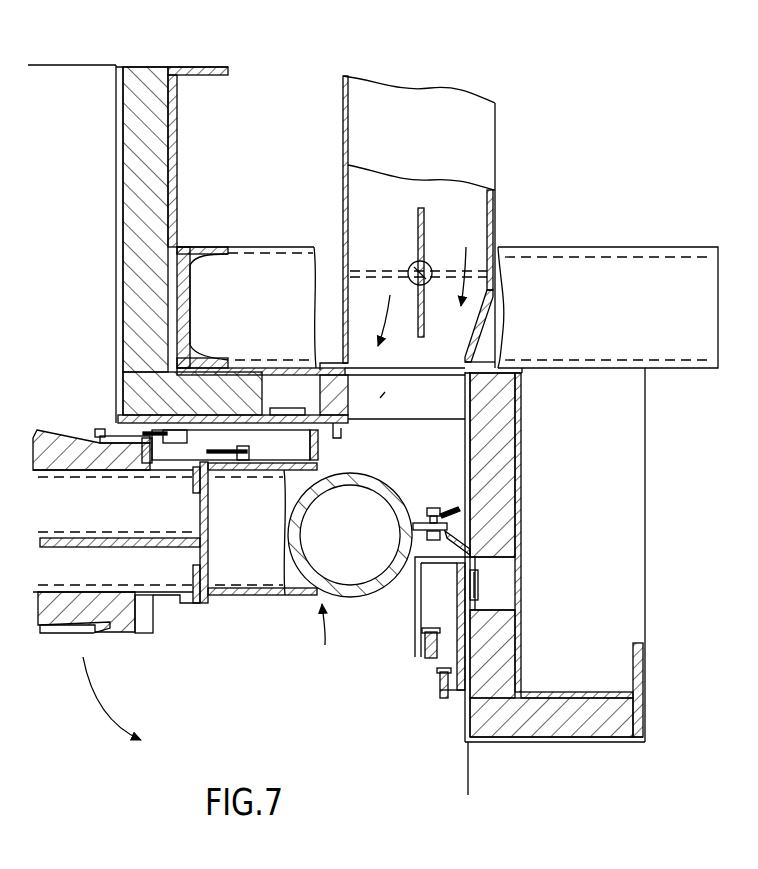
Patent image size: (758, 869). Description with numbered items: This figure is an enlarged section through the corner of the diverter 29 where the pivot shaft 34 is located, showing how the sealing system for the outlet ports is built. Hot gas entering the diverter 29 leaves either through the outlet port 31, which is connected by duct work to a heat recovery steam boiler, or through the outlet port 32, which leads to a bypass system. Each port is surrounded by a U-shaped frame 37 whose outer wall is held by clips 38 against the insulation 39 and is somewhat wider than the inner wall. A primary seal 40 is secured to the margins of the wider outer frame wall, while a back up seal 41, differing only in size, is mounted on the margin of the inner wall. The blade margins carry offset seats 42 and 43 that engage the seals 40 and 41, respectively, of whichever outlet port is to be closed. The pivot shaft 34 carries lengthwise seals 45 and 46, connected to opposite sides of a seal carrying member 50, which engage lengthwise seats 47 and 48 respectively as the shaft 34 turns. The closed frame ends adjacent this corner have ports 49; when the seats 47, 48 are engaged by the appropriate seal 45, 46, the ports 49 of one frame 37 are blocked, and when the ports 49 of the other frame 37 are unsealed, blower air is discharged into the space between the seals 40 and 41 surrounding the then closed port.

The diverter 29 is at (325, 640).
The outlet port 31 is at (558, 772).
The outlet port 32 is at (86, 76).
The pivot shaft 34 is at (352, 597).
The frame 37 is at (285, 595).
The clips 38 is at (479, 586).
The insulation 39 is at (136, 242).
The primary seal 40 is at (442, 700).
The back up seal 41 is at (216, 466).
The seat 42 is at (180, 603).
The seat 43 is at (100, 436).
The lengthwise seal 45 is at (446, 520).
The lengthwise seal 46 is at (456, 534).
The lengthwise seat 47 is at (472, 553).
The lengthwise seat 48 is at (354, 443).
The ports 49 is at (323, 443).
The seal carrying member 50 is at (431, 510).